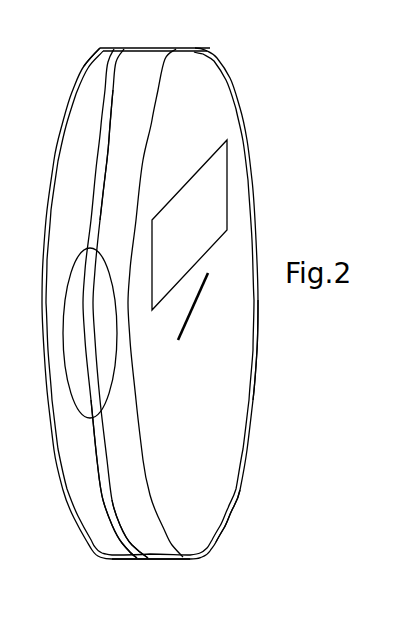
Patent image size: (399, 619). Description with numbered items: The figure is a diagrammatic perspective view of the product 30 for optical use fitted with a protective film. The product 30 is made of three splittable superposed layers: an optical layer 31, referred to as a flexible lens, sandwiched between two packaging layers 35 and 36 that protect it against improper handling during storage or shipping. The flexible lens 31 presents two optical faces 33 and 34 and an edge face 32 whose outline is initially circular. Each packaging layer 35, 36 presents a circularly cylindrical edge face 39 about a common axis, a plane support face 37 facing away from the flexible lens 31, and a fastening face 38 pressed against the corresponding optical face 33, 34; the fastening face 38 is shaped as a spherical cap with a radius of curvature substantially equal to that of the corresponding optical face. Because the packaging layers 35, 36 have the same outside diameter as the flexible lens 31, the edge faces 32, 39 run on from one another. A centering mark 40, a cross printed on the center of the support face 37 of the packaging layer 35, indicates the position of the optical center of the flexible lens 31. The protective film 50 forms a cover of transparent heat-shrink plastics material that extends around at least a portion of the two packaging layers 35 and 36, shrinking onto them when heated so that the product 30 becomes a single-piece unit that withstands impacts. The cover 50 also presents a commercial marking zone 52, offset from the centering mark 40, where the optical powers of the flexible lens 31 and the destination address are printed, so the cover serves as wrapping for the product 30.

The product for optical use 30 is at (243, 71).
The optical layer 31 is at (127, 55).
The edge face 32 is at (95, 190).
The optical face 33 is at (100, 488).
The optical face 34 is at (106, 456).
The packaging layer 35 is at (167, 55).
The packaging layer 36 is at (106, 60).
The support face 37 is at (228, 478).
The fastening face 38 is at (110, 503).
The edge face 39 is at (94, 536).
The centering mark 40 is at (190, 304).
The protective film 50 is at (268, 385).
The commercial marking zone 52 is at (228, 158).